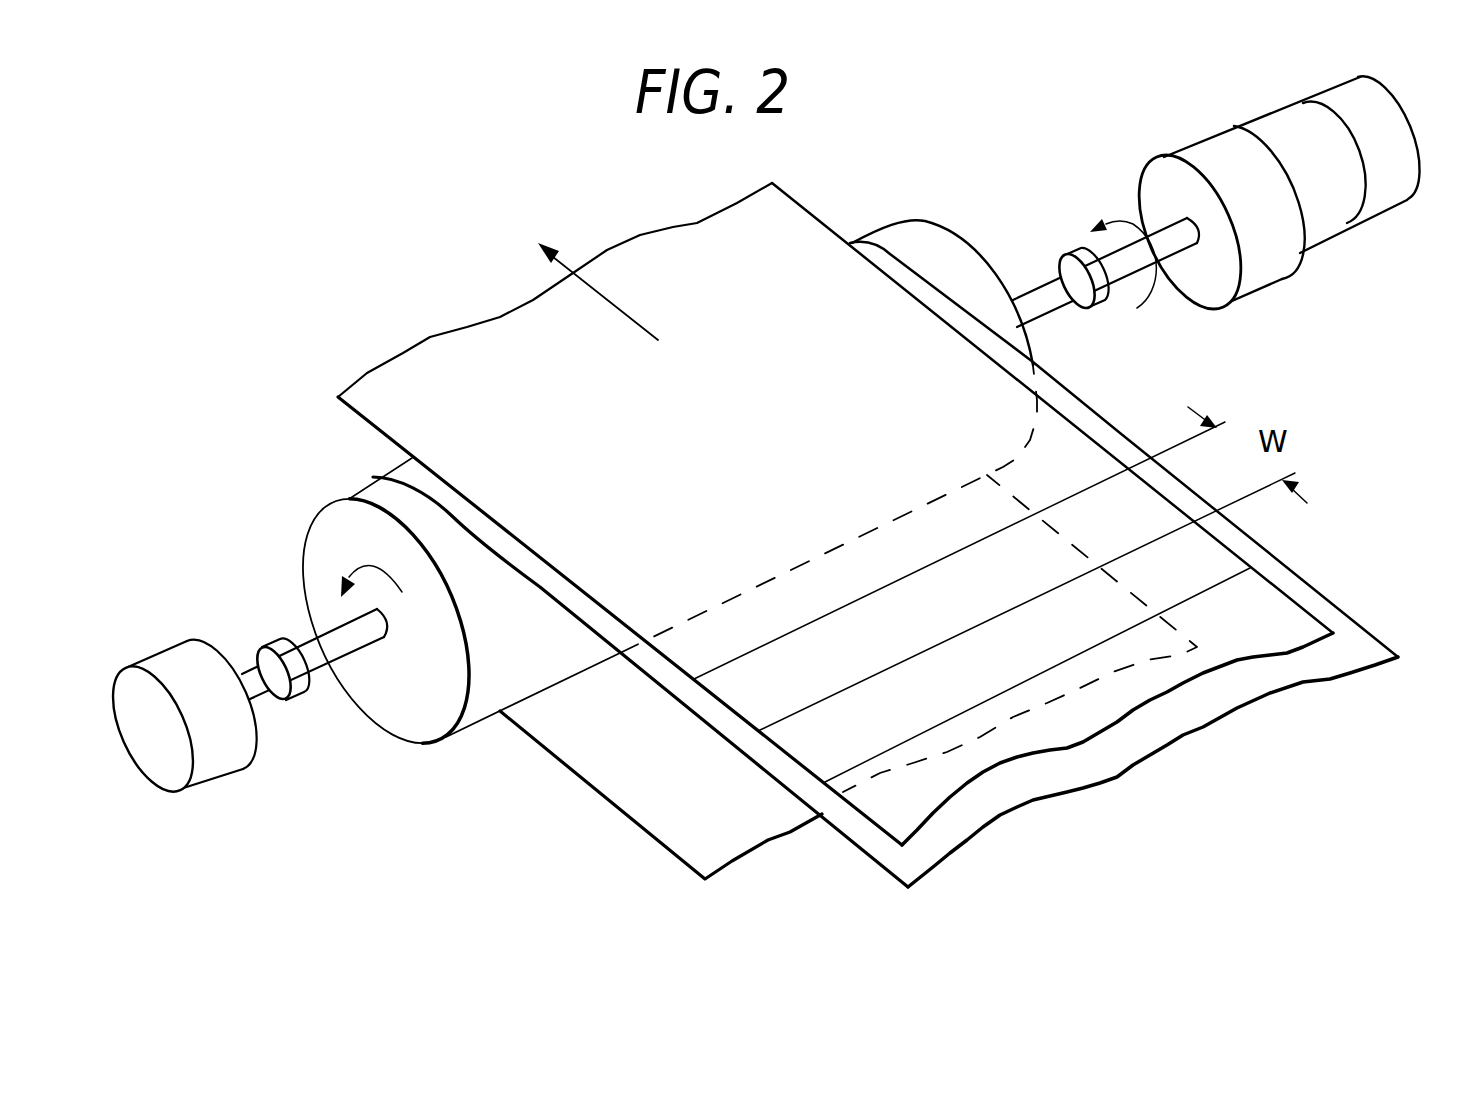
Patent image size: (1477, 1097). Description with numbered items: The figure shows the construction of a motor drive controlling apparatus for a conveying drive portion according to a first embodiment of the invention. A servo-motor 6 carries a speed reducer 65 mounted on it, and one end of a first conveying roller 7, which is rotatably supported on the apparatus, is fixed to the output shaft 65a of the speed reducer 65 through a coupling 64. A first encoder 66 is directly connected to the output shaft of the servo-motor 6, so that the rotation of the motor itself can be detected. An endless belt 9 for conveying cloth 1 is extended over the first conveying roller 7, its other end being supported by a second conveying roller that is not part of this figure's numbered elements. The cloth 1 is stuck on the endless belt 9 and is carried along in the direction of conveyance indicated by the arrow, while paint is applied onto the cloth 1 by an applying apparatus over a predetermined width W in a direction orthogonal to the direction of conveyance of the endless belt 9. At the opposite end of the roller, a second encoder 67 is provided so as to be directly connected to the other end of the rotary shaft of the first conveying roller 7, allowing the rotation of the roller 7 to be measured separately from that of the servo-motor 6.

The cloth 1 is at (817, 231).
The endless belt 9 is at (890, 254).
The coupling 64 is at (1078, 259).
The output shaft 65a is at (1182, 245).
The speed reducer 65 is at (1277, 267).
The servo-motor 6 is at (1345, 223).
The first encoder 66 is at (1402, 197).
The first conveying roller 7 is at (313, 532).
The second encoder 67 is at (233, 753).